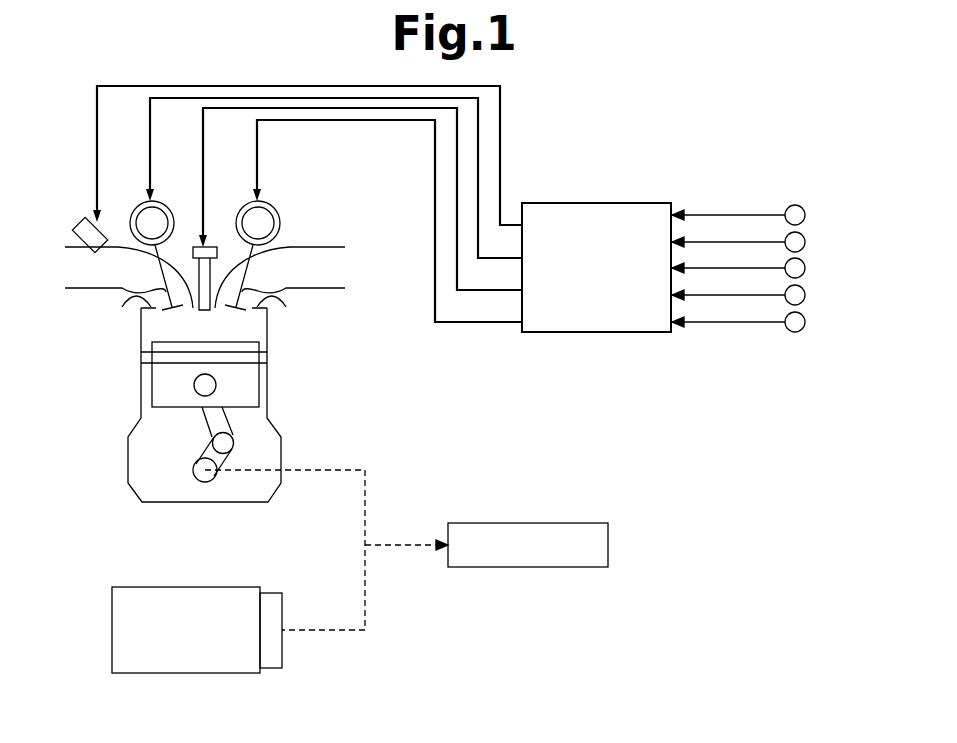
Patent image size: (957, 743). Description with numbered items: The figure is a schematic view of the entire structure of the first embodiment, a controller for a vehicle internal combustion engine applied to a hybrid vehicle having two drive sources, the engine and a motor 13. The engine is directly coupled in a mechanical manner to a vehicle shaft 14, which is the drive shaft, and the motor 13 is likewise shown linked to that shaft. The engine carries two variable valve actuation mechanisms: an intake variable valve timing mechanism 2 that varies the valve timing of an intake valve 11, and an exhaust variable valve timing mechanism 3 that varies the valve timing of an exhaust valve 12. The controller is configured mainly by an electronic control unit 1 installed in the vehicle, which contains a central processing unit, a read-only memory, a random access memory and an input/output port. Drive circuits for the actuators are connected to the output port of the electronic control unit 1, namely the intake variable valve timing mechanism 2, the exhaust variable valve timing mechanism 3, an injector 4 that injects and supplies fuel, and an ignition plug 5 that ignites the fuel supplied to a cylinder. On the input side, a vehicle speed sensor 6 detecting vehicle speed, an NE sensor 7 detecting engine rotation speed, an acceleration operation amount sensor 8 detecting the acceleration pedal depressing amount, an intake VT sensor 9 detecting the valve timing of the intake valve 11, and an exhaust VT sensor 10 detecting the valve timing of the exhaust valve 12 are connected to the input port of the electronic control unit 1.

The electronic control unit 1 is at (594, 333).
The intake variable valve timing mechanism 2 is at (136, 203).
The exhaust variable valve timing mechanism 3 is at (272, 199).
The injector 4 is at (82, 218).
The ignition plug 5 is at (208, 245).
The vehicle speed sensor 6 is at (805, 215).
The NE sensor 7 is at (805, 242).
The acceleration operation amount sensor 8 is at (805, 268).
The intake VT sensor 9 is at (805, 295).
The exhaust VT sensor 10 is at (805, 322).
The intake valve 11 is at (127, 315).
The exhaust valve 12 is at (282, 315).
The motor 13 is at (112, 608).
The vehicle shaft 14 is at (528, 568).